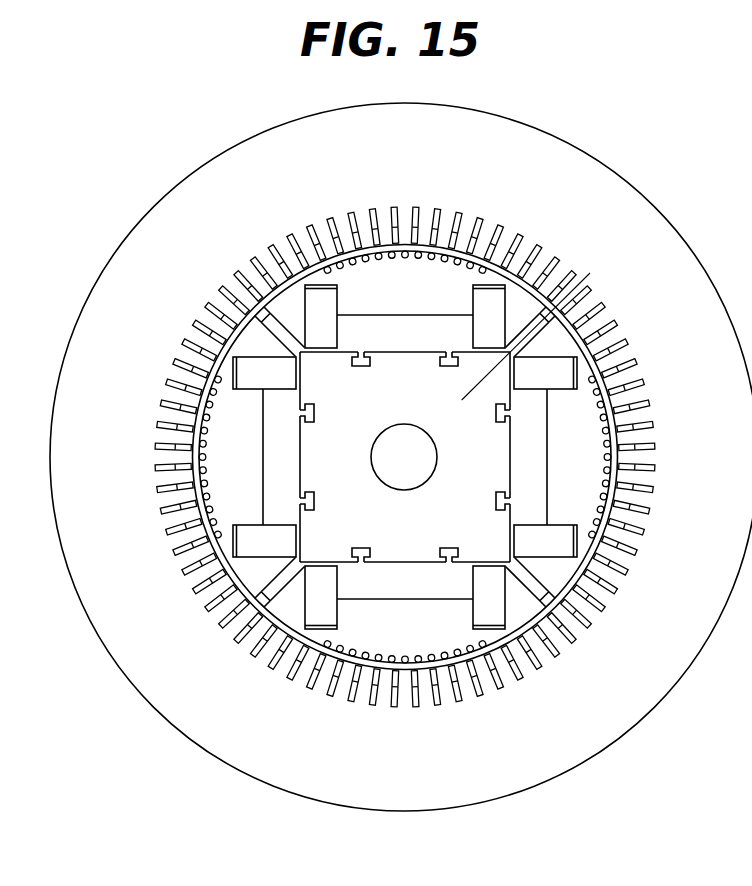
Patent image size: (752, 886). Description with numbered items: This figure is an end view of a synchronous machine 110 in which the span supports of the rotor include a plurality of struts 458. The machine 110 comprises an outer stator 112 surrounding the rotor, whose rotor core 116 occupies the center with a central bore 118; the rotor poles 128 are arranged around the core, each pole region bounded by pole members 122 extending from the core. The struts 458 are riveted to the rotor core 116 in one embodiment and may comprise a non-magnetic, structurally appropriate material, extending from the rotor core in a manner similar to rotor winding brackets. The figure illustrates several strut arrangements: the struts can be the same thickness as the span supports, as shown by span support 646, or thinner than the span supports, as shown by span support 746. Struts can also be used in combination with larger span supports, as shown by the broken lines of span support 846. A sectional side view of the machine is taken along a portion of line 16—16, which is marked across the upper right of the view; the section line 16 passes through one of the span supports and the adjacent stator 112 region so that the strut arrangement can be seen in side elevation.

The electric machine 110 is at (128, 161).
The stator 112 is at (425, 168).
The permanent magnet 128 is at (425, 302).
The rotor pole arm 122 is at (425, 342).
The rotor core 116 is at (423, 420).
The shaft bore 118 is at (425, 471).
The span support 646 is at (547, 308).
The line 16— 16 is at (450, 377).
The struts 458 is at (528, 335).
The span support 746 is at (252, 322).
The span support 846 is at (272, 605).